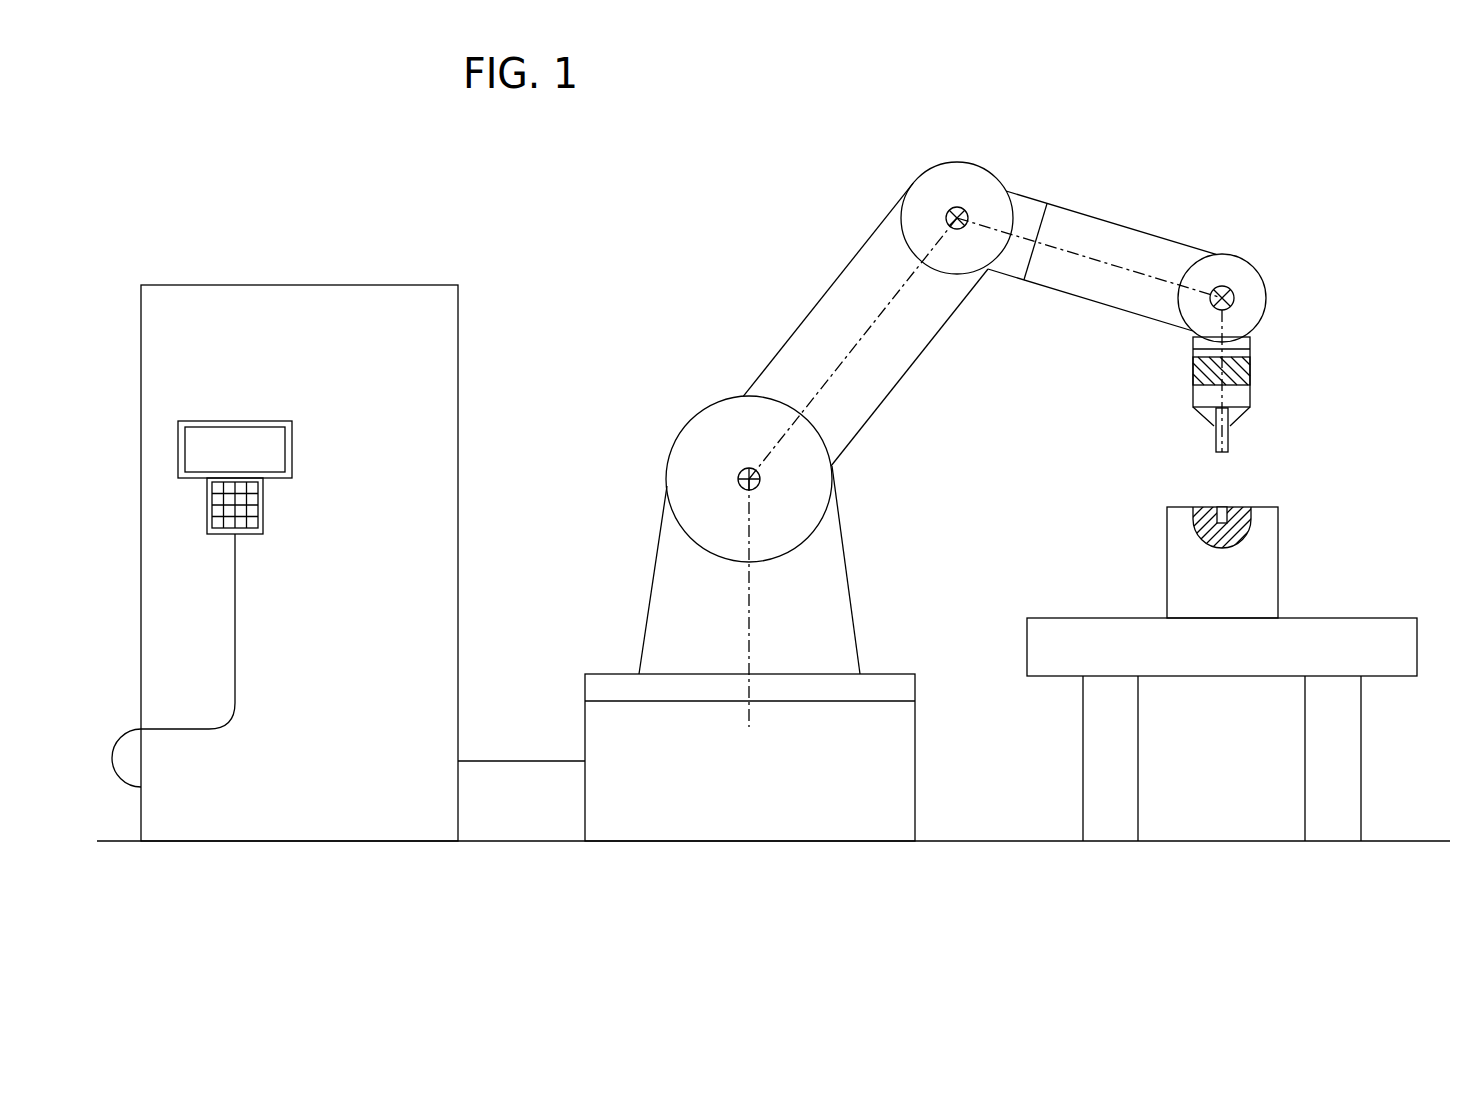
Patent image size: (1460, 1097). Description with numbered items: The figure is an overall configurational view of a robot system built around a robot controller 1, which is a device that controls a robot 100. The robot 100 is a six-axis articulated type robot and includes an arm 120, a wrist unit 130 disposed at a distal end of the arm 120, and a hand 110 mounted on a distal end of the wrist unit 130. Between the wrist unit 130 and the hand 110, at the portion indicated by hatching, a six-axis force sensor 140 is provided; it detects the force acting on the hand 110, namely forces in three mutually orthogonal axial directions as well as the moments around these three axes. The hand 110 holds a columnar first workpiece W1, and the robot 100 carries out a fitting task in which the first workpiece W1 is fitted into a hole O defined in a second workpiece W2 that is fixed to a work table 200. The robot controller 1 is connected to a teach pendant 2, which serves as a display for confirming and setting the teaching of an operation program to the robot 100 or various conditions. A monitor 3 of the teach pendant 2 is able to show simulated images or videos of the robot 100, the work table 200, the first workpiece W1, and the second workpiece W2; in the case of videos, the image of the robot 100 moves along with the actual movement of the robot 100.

The robot controller 1 is at (316, 285).
The teach pendant 2 is at (296, 447).
The monitor 3 is at (232, 452).
The robot 100 is at (979, 476).
The arm 120 is at (835, 273).
The wrist unit 130 is at (1233, 381).
The force sensor 140 is at (1193, 367).
The hand 110 is at (1240, 418).
The first workpiece W1 is at (1215, 437).
The second workpiece W2 is at (1270, 527).
The hole O is at (1225, 504).
The work table 200 is at (1231, 639).